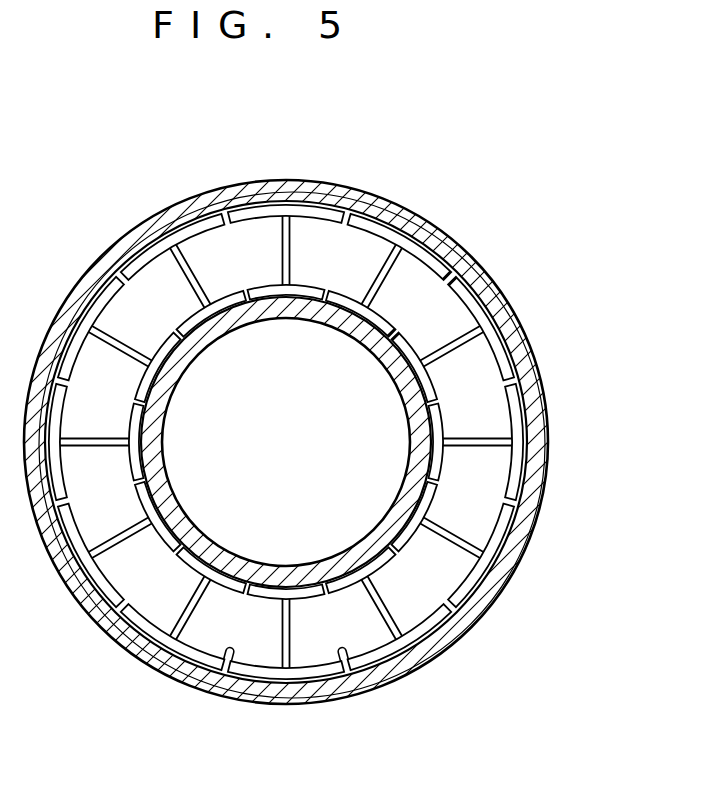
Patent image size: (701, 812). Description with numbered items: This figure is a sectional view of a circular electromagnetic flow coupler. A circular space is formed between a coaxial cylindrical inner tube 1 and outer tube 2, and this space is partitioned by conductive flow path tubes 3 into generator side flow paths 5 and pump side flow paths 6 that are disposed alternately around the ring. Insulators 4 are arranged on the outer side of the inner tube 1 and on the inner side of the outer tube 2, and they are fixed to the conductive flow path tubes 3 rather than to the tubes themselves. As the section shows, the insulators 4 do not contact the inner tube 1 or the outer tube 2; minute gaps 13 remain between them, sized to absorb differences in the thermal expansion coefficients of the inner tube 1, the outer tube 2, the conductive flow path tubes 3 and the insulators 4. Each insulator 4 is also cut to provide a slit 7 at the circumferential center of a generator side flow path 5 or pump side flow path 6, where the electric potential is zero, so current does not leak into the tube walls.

The inner tube 1 is at (347, 547).
The outer tube 2 is at (344, 185).
The conductive flow path tubes 3 is at (398, 618).
The insulators 4 is at (470, 287).
The generator side flow paths 5 is at (450, 323).
The pump side flow paths 6 is at (470, 377).
The slit 7 is at (233, 665).
The gaps 13 is at (263, 204).